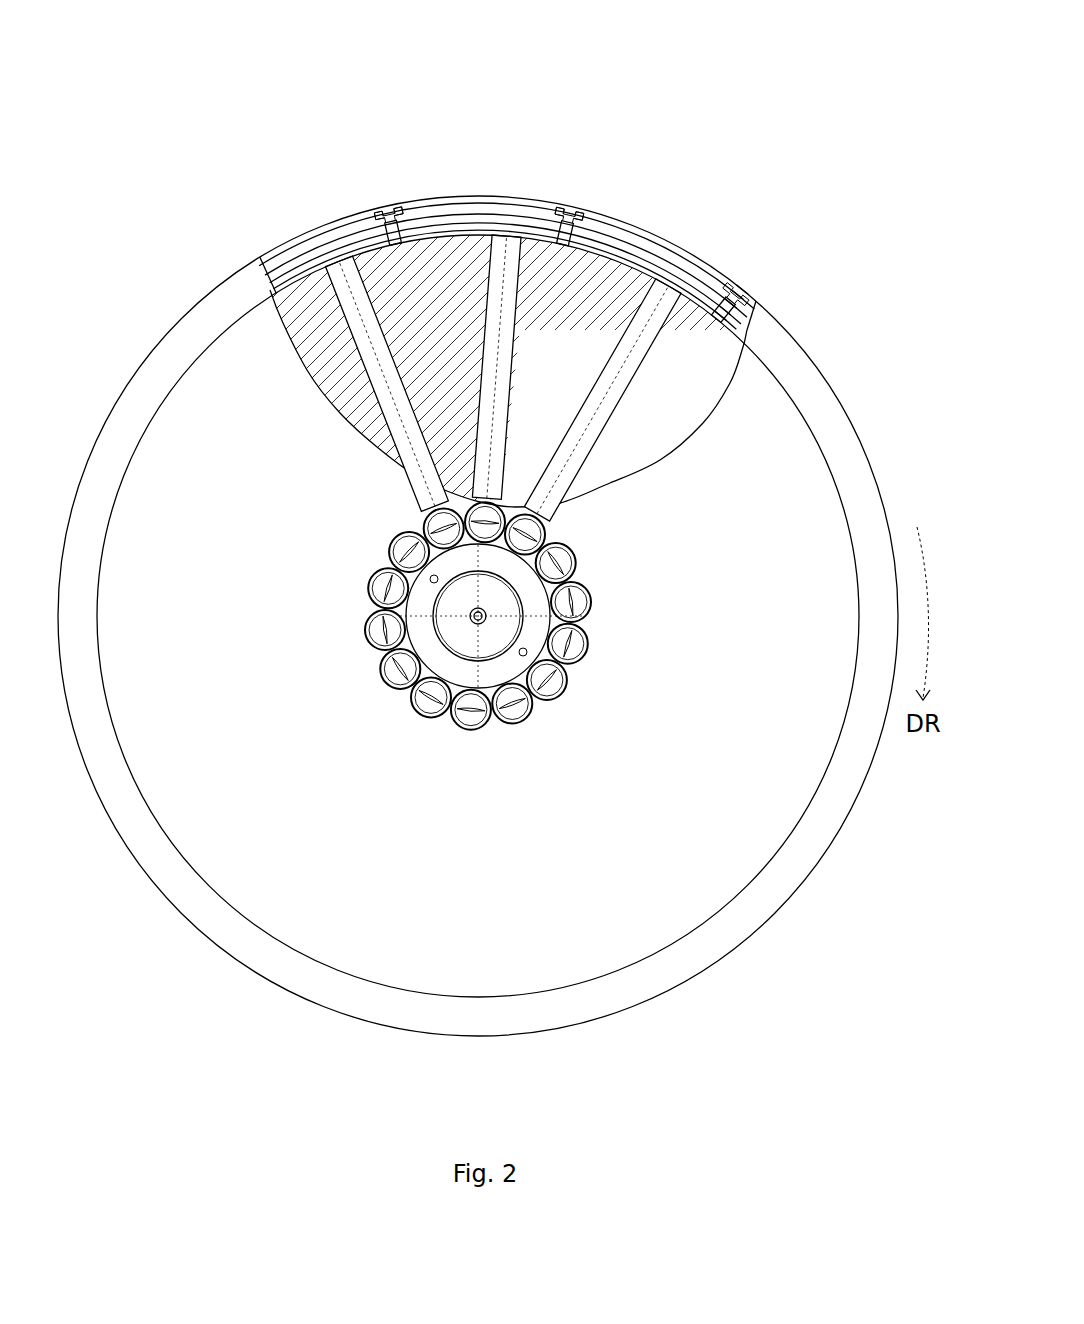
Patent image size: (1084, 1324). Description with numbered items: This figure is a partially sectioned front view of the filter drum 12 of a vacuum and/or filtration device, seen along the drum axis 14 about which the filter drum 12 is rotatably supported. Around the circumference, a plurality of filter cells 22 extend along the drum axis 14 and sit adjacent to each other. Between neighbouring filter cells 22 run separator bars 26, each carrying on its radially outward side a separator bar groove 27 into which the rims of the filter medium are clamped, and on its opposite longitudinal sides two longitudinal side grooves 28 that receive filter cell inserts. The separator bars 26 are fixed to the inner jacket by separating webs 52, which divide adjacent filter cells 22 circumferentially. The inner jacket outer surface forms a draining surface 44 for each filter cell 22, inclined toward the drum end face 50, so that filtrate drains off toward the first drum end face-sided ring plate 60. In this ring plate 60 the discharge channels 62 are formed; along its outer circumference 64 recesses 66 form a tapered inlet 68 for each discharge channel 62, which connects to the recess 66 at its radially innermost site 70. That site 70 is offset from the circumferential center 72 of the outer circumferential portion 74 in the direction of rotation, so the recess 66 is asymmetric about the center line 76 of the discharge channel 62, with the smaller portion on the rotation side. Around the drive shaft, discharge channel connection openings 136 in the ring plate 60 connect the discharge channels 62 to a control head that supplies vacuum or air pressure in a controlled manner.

The filter drum 12 is at (147, 358).
The drum axis 14 is at (481, 616).
The filter cells 22 is at (453, 217).
The separator bars 26 is at (370, 237).
The separator bar groove 27 is at (378, 210).
The longitudinal side grooves 28 is at (403, 217).
The draining surfaces 44 is at (283, 277).
The drum end face 50 is at (338, 232).
The separating webs 52 is at (393, 236).
The first drum end face-sided ring plate 60 is at (777, 487).
The discharge channels 62 is at (575, 427).
The outer circumference 64 is at (433, 235).
The recesses 66 is at (630, 270).
The inlet 68 is at (660, 294).
The radially innermost site 70 is at (703, 275).
The circumferential center 72 is at (645, 265).
The outer circumferential portion 74 is at (657, 291).
The center line 76 is at (380, 363).
The discharge channel connection openings 136 is at (393, 550).